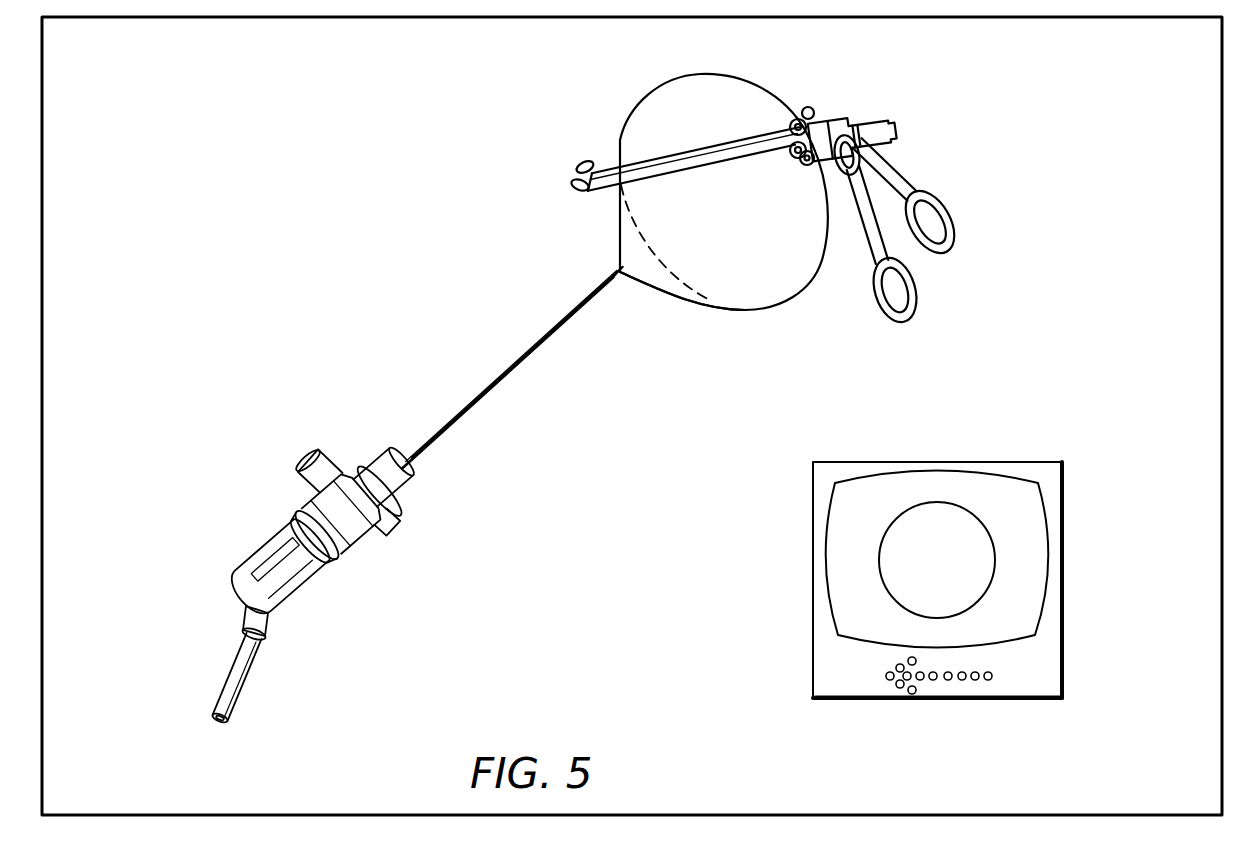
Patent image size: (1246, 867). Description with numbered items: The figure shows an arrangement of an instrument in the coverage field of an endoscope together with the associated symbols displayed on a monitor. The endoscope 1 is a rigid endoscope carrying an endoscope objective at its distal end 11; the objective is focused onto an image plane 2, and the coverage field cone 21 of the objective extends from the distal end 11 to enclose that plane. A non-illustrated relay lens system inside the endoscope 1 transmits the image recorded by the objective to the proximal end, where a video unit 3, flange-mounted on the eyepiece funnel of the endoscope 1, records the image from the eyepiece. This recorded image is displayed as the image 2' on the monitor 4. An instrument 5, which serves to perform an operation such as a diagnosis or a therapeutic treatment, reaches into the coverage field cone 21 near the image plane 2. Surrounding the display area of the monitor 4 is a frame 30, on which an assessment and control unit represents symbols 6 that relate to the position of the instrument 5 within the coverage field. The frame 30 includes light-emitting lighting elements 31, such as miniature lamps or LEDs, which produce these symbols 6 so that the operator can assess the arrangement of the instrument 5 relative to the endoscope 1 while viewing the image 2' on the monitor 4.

The endoscope 1 is at (516, 376).
The image plane 2 is at (724, 206).
The image 2' is at (937, 560).
The video unit 3 is at (312, 612).
The monitor 4 is at (1062, 653).
The instrument 5 is at (950, 205).
The symbols 6 is at (950, 684).
The distal end 11 is at (617, 270).
The coverage field cone 21 is at (652, 290).
The frame 30 is at (1013, 680).
The lighting elements 31 is at (890, 684).